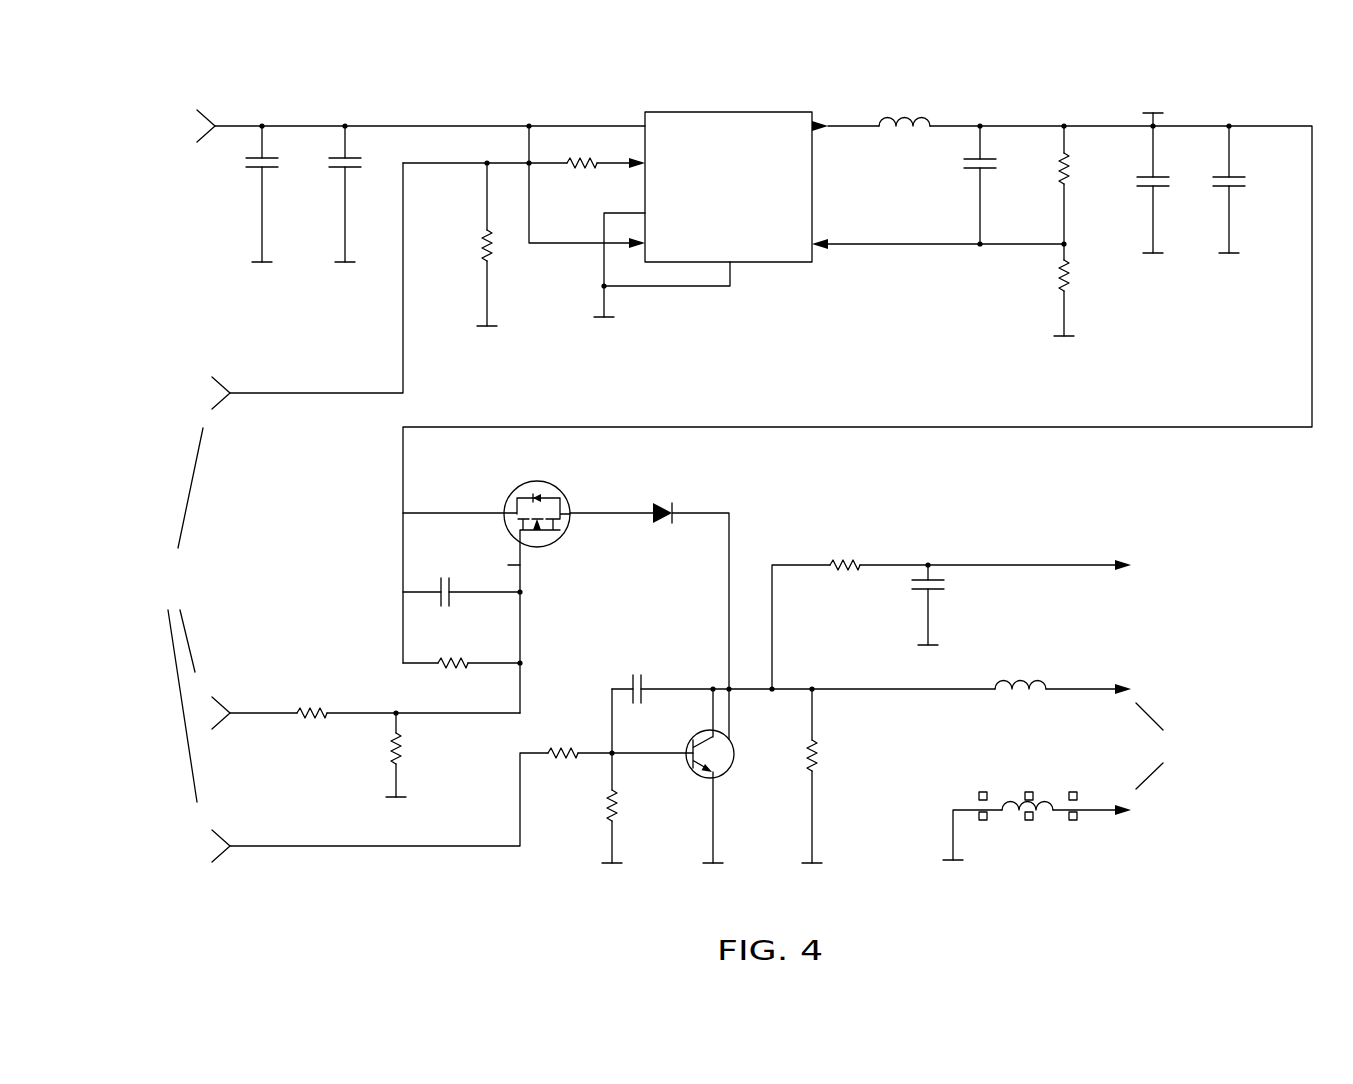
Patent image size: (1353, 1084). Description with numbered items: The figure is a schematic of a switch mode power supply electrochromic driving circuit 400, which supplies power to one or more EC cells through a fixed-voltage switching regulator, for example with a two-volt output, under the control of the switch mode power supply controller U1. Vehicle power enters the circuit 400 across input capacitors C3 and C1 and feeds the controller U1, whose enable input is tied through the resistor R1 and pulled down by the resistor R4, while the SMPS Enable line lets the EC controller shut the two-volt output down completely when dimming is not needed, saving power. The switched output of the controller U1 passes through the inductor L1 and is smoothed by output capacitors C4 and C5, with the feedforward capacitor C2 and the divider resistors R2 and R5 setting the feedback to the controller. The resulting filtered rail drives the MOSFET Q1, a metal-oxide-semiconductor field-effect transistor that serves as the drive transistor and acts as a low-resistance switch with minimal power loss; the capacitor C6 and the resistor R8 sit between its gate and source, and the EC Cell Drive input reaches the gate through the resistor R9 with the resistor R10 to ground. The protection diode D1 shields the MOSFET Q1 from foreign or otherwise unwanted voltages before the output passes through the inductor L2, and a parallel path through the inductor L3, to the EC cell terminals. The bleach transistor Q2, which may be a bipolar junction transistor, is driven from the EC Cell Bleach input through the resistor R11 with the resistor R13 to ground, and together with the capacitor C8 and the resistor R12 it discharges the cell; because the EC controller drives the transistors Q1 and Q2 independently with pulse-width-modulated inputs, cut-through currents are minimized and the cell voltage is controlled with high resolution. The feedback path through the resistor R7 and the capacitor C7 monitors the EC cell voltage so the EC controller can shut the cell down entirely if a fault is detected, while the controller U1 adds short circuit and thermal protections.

The switch mode power supply EC driving circuit 400 is at (145, 130).
The input capacitor 0.1 uF C1 is at (358, 215).
The feedforward capacitor 22 pF C2 is at (946, 186).
The input capacitor 10 uF C3 is at (287, 215).
The output capacitor 10 uF C4 is at (1178, 212).
The output capacitor 0.01 uF C5 is at (1259, 212).
The gate capacitor 0.1 uF C6 is at (463, 563).
The feedback filter capacitor 2.2 uF C7 is at (953, 623).
The capacitor 0.1 uF C8 is at (803, 652).
The enable resistor 0 Ohm R1 is at (524, 167).
The feedback resistor 432 K R2 is at (1094, 186).
The pull-down resistor 10 K R4 is at (503, 267).
The feedback resistor 182 K R5 is at (1087, 311).
The feedback resistor 49.9 K R7 is at (951, 605).
The gate resistor 1 Meg R8 is at (463, 667).
The drive resistor 270 Ohm R9 is at (375, 720).
The resistor 750 Ohm R10 is at (434, 776).
The base resistor 1 K R11 is at (461, 778).
The bleed resistor 200 Ohm R12 is at (851, 796).
The base pull-down resistor 100 K R13 is at (639, 796).
The switch mode power supply controller U1 is at (685, 219).
The inductor 2.2 uH L1 is at (896, 127).
The output inductor L2 is at (1054, 663).
The output inductor L3 is at (1035, 830).
The MOSFET drive transistor Q1 is at (520, 577).
The bleach transistor Q2 is at (719, 796).
The protection diode D1 is at (702, 599).